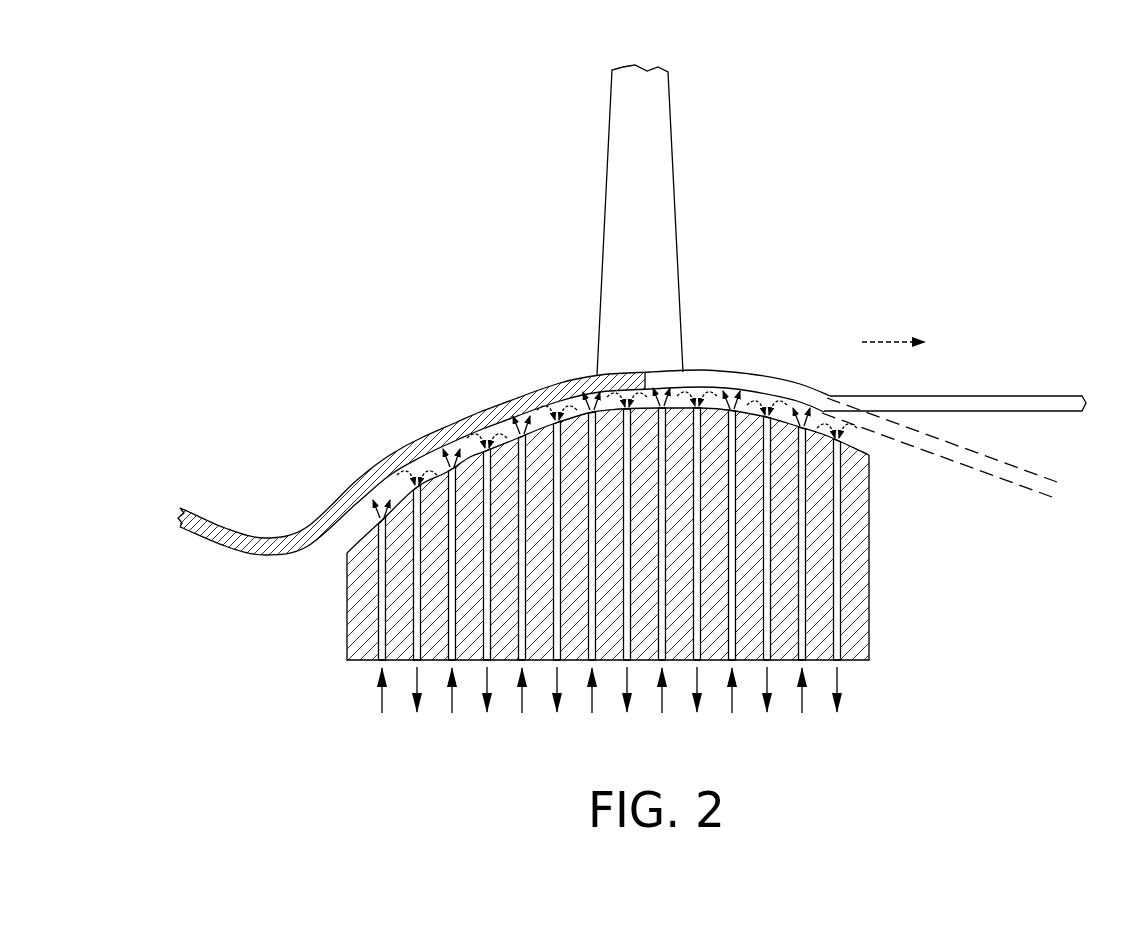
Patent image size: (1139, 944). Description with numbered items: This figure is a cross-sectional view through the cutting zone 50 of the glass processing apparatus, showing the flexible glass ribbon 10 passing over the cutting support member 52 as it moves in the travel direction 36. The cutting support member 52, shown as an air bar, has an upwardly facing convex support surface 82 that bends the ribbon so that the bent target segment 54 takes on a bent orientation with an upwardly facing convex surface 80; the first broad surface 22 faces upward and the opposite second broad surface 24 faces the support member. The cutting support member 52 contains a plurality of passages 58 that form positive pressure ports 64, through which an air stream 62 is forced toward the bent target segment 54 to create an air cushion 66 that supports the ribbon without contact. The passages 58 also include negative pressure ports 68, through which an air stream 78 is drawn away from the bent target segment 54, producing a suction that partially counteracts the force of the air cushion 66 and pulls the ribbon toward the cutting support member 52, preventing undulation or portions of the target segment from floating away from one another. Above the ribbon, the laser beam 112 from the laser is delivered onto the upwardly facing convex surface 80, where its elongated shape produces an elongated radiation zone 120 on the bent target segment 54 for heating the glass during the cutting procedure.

The flexible glass ribbon 10 is at (250, 530).
The first broad surface 22 is at (967, 394).
The second broad surface 24 is at (997, 413).
The travel direction 36 is at (885, 342).
The cutting zone 50 is at (662, 617).
The cutting support member 52 is at (874, 610).
The bent target segment 54 is at (477, 411).
The passages 58 is at (847, 569).
The air stream 62 is at (800, 707).
The positive pressure ports 64 is at (805, 523).
The air cushion 66 is at (352, 530).
The negative pressure ports 68 is at (837, 485).
The air stream 78 is at (840, 684).
The upwardly facing convex surface 80 is at (516, 393).
The upwardly facing convex support surface 82 is at (435, 460).
The laser beam 112 is at (673, 178).
The elongated radiation zone 120 is at (628, 371).